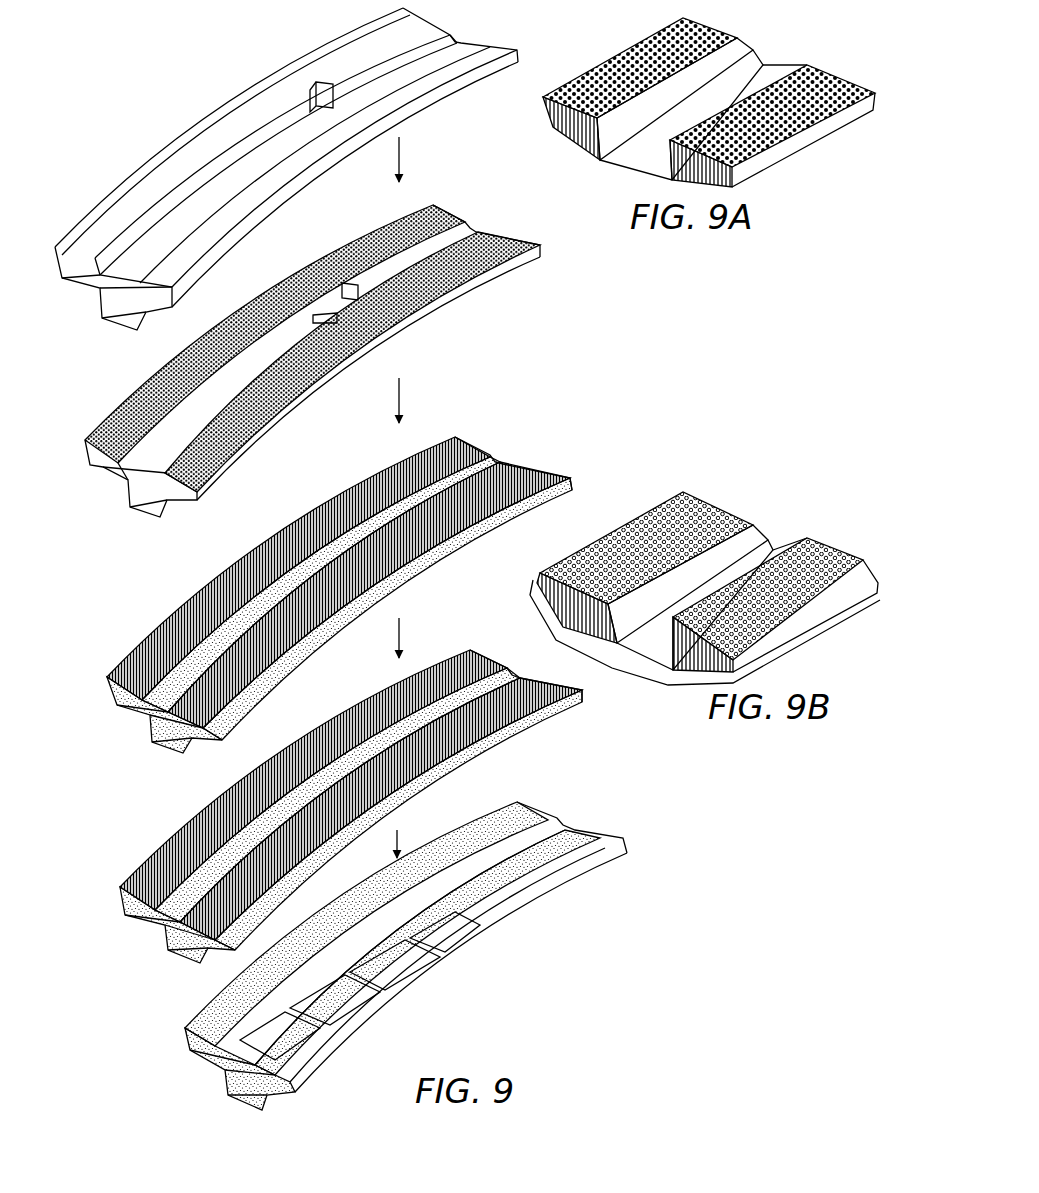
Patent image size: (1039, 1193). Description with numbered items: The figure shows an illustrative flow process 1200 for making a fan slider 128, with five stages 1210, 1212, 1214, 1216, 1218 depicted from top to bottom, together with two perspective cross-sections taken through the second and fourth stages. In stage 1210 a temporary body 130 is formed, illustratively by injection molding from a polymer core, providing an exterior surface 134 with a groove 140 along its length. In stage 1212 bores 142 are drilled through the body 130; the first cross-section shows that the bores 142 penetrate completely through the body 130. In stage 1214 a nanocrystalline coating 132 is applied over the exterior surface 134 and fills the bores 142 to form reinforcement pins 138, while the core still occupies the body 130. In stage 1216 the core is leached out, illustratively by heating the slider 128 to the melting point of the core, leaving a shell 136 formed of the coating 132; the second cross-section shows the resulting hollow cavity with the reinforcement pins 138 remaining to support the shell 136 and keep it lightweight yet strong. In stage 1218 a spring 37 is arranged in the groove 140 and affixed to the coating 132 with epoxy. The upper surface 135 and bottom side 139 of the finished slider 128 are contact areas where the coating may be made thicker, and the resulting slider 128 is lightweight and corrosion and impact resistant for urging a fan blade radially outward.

In FIG. 9, the flow process 1200 is at (160, 96).
In FIG. 9, the stage 1210 is at (346, 412).
In FIG. 9, the stage 1212 is at (359, 352).
In FIG. 9, the stage 1214 is at (396, 738).
In FIG. 9, the stage 1216 is at (375, 806).
In FIG. 9, the stage 1218 is at (467, 945).
In FIG. 9, the body 130 is at (524, 55).
In FIG. 9B, the body 130 is at (613, 645).
In FIG. 9, the coating 132 is at (487, 447).
In FIG. 9B, the coating 132 is at (740, 523).
In FIG. 9, the exterior surface 134 is at (318, 72).
In FIG. 9, the upper surface 135 is at (486, 846).
In FIG. 9, the shell 136 is at (121, 876).
In FIG. 9, the spring 37 is at (376, 944).
In FIG. 9, the reinforcement pins 138 is at (176, 613).
In FIG. 9B, the reinforcement pins 138 is at (549, 563).
In FIG. 9, the bottom side 139 is at (489, 942).
In FIG. 9, the groove 140 is at (458, 40).
In FIG. 9, the bores 142 is at (113, 412).
In FIG. 9, the fan slider 128 is at (629, 835).